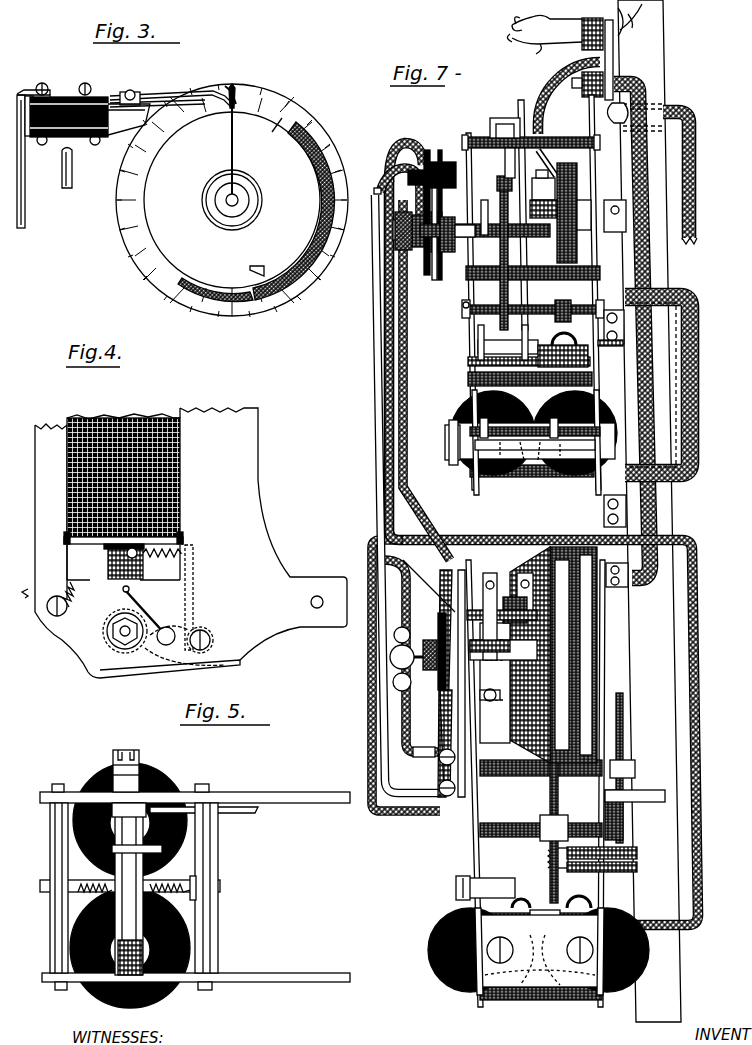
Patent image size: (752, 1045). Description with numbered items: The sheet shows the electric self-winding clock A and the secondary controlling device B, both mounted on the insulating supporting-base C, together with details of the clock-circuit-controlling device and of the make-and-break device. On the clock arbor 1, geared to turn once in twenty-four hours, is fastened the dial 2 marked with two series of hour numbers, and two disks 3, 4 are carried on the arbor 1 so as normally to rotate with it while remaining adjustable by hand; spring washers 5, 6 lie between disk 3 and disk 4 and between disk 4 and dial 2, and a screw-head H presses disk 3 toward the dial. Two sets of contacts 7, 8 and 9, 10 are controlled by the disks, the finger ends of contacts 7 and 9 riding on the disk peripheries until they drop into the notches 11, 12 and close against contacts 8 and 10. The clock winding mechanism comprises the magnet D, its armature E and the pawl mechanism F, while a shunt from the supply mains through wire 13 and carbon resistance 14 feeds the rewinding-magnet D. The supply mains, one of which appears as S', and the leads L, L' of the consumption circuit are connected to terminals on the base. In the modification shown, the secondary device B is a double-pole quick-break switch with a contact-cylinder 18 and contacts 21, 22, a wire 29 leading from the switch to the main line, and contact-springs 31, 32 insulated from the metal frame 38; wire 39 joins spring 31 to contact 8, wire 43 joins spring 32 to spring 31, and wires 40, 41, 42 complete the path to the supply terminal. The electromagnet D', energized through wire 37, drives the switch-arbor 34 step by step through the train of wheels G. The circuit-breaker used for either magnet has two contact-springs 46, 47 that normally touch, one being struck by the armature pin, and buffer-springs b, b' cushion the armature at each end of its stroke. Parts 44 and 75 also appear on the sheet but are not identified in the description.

In FIG. 3, the arbor 1 is at (232, 194).
In FIG. 7, the arbor 1 is at (455, 216).
In FIG. 3, the dial 2 is at (317, 142).
In FIG. 7, the dial 2 is at (440, 162).
In FIG. 3, the disk 3 is at (218, 200).
In FIG. 7, the disk 3 is at (408, 143).
In FIG. 3, the disk 4 is at (278, 124).
In FIG. 7, the disk 4 is at (424, 160).
In FIG. 7, the spring washer 5 is at (422, 255).
In FIG. 7, the spring washer 6 is at (426, 276).
In FIG. 3, the contact 7 is at (155, 99).
In FIG. 3, the contact 8 is at (124, 132).
In FIG. 3, the contact 9 is at (200, 93).
In FIG. 3, the contact 10 is at (130, 92).
In FIG. 3, the notch 11 is at (235, 106).
In FIG. 3, the notch 12 is at (252, 272).
In FIG. 3, the wire 13 is at (330, 170).
In FIG. 7, the carbon resistance 14 is at (540, 116).
In FIG. 7, the contact-cylinder 18 is at (451, 652).
In FIG. 7, the switch contact 21 is at (483, 588).
In FIG. 7, the switch contact 22 is at (520, 582).
In FIG. 7, the wire 29 is at (696, 196).
In FIG. 7, the contact-spring 31 is at (438, 610).
In FIG. 7, the contact-spring 32 is at (434, 743).
In FIG. 7, the switch-arbor 34 is at (391, 659).
In FIG. 7, the wire 37 is at (700, 718).
In FIG. 7, the frame 38 is at (474, 860).
In FIG. 3, the wire 39 is at (72, 180).
In FIG. 7, the wire 39 is at (402, 377).
In FIG. 7, the wire 40 is at (378, 445).
In FIG. 7, the wire 41 is at (370, 750).
In FIG. 7, the wire 42 is at (668, 258).
In FIG. 7, the wire 43 is at (398, 693).
In FIG. 3, the conductor 44 is at (20, 94).
In FIG. 7, the conductor 44 is at (388, 335).
In FIG. 4, the contact-spring 46 is at (108, 628).
In FIG. 4, the contact-spring 47 is at (164, 628).
In FIG. 7, the bar 75 is at (486, 632).
In FIG. 7, the electric self-winding clock A is at (604, 276).
In FIG. 7, the secondary controlling device B is at (600, 910).
In FIG. 7, the supporting-base C is at (658, 80).
In FIG. 4, the magnet D is at (139, 479).
In FIG. 5, the magnet D is at (139, 881).
In FIG. 7, the magnet D is at (534, 442).
In FIG. 7, the electromagnet D' is at (543, 951).
In FIG. 5, the armature E is at (185, 870).
In FIG. 7, the armature E is at (536, 470).
In FIG. 7, the pawl mechanism F is at (500, 350).
In FIG. 7, the train of wheels G is at (627, 810).
In FIG. 3, the screw-head H is at (250, 210).
In FIG. 7, the screw-head H is at (395, 243).
In FIG. 7, the lead L is at (560, 60).
In FIG. 7, the lead L' is at (557, 27).
In FIG. 7, the main S' is at (633, 25).
In FIG. 4, the buffer-spring b is at (101, 580).
In FIG. 4, the buffer-spring b' is at (171, 592).